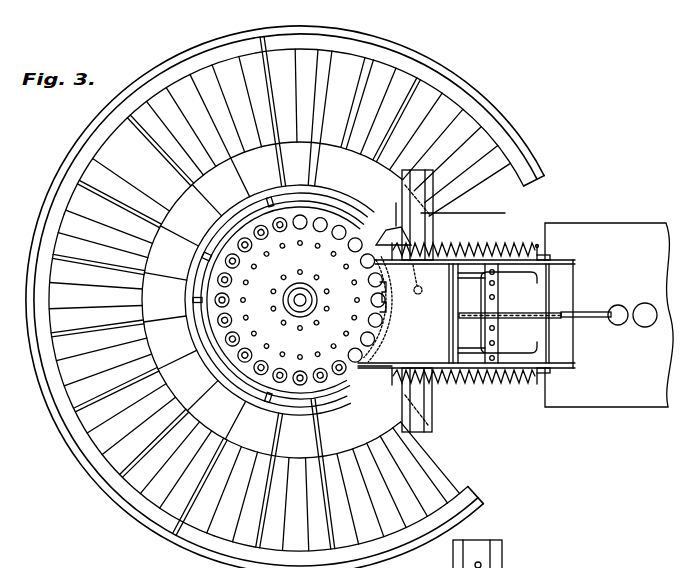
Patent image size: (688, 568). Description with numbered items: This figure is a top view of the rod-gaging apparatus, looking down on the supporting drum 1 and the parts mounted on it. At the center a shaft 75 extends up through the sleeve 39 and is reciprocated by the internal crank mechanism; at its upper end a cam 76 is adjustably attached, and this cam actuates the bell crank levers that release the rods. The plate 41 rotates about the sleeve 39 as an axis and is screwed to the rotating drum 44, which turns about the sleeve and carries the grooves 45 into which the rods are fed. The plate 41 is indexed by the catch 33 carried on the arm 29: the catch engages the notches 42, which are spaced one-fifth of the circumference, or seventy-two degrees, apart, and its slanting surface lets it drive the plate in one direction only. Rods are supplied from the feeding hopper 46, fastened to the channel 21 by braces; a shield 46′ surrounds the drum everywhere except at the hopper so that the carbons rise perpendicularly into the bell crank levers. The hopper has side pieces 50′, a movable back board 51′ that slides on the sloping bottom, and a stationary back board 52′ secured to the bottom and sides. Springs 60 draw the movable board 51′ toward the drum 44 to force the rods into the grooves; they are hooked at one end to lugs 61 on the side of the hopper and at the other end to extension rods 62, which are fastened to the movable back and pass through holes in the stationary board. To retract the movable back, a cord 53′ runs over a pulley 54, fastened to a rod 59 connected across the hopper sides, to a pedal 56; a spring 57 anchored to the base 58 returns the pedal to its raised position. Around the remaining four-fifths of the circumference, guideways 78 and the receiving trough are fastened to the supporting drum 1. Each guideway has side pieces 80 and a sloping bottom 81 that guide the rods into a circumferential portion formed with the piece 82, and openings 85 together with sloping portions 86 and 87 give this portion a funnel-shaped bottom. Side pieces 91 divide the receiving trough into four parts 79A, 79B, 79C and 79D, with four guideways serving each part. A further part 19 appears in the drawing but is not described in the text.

The supporting drum 1 is at (443, 418).
The guide bar 19 is at (505, 213).
The channel 21 is at (433, 442).
The arm 29 is at (412, 237).
The catch 33 is at (376, 246).
The sleeve 39 is at (302, 318).
The plate 41 is at (233, 363).
The notches 42 is at (273, 208).
The rotating drum 44 is at (300, 300).
The grooves 45 is at (392, 337).
The hopper 46 is at (377, 326).
The shield 46′ is at (217, 263).
The side pieces 50′ is at (548, 265).
The movable back board 51′ is at (452, 358).
The stationary back board 52′ is at (496, 334).
The cord 53′ is at (530, 317).
The pulley 54 is at (510, 305).
The pedal 56 is at (619, 306).
The spring 57 is at (613, 322).
The base 58 is at (609, 315).
The rod 59 is at (559, 314).
The springs 60 is at (480, 245).
The lugs 61 is at (397, 366).
The extension rods 62 is at (541, 250).
The shaft 75 is at (314, 291).
The cam 76 is at (289, 300).
The guideways 78 is at (279, 304).
The receiving hopper part 79A is at (341, 528).
The receiving hopper part 79B is at (131, 375).
The receiving hopper part 79C is at (214, 131).
The receiving hopper part 79D is at (444, 119).
The side pieces 80 is at (406, 106).
The sloping bottom 81 is at (272, 300).
The piece 82 is at (291, 49).
The openings 85 is at (227, 273).
The sloping portion 86 is at (335, 304).
The sloping portion 87 is at (296, 299).
The side pieces 91 is at (483, 499).